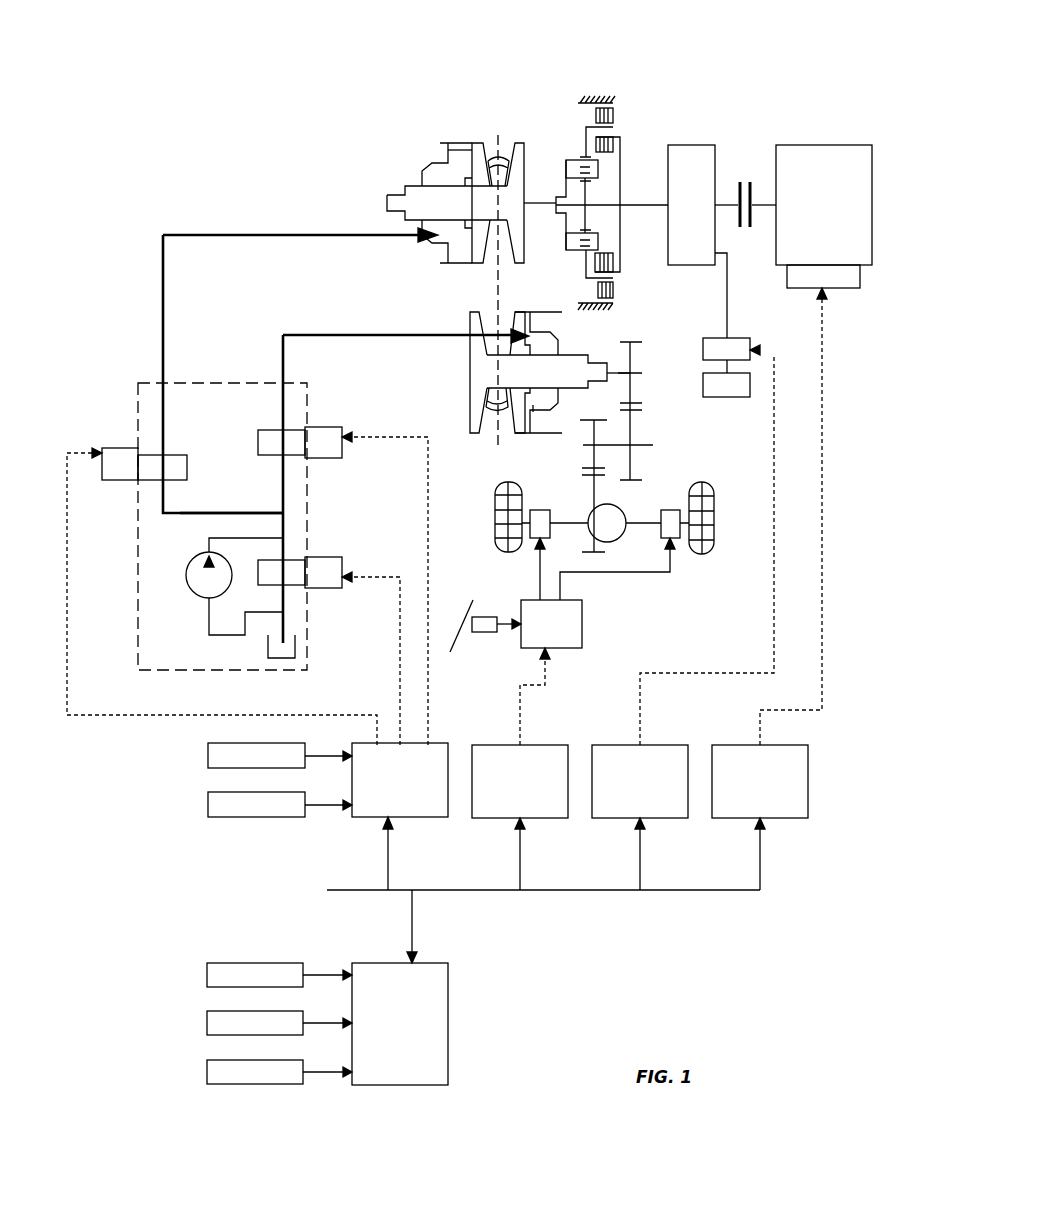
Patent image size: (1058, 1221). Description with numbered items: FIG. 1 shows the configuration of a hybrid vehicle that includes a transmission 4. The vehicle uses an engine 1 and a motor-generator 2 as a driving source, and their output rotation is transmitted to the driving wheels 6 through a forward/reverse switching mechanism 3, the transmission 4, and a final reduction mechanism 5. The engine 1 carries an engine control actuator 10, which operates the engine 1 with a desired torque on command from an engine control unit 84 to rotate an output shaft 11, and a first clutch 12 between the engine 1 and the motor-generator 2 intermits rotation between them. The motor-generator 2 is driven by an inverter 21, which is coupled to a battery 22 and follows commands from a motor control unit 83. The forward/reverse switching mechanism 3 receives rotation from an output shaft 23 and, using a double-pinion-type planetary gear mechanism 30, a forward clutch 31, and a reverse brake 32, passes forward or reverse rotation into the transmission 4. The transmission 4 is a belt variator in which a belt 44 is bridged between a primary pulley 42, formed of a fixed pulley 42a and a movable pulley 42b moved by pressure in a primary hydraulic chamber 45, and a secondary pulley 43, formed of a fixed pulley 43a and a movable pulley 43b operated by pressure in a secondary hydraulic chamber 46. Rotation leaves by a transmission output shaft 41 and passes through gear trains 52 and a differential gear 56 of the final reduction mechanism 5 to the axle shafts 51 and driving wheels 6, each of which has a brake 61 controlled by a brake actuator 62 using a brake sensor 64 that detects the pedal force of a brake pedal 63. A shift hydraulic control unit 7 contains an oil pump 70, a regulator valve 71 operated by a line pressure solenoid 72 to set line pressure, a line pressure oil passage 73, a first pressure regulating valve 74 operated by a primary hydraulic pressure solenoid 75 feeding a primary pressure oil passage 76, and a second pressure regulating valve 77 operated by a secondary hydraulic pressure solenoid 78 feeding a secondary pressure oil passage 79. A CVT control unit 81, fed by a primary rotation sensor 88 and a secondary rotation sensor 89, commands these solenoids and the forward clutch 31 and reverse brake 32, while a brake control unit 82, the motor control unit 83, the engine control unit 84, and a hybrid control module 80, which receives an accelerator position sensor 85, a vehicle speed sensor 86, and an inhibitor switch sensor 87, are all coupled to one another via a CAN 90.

The engine 1 is at (833, 145).
The motor-generator 2 is at (700, 143).
The forward/reverse switching mechanism 3 is at (614, 166).
The transmission 4 is at (502, 88).
The final reduction mechanism 5 is at (665, 418).
The driving wheels 6 is at (495, 530).
The shift hydraulic control unit 7 is at (150, 380).
The engine control actuator 10 is at (860, 293).
The output shaft 11 is at (758, 198).
The first clutch 12 is at (742, 180).
The inverter 21 is at (710, 337).
The battery 22 is at (702, 383).
The output shaft 23 is at (635, 198).
The double-pinion-type planetary gear mechanism 30 is at (587, 220).
The forward clutch 31 is at (610, 137).
The reverse brake 32 is at (612, 106).
The transmission output shaft 41 is at (617, 373).
The primary pulley 42 is at (450, 167).
The fixed pulley 42a is at (518, 138).
The movable pulley 42b is at (480, 140).
The secondary pulley 43 is at (513, 374).
The fixed pulley 43a is at (460, 318).
The movable pulley 43b is at (522, 310).
The belt 44 is at (493, 418).
The primary hydraulic chamber 45 is at (460, 157).
The secondary hydraulic chamber 46 is at (537, 410).
The axle shafts 51 is at (562, 528).
The gear trains 52 is at (632, 460).
The differential gear 56 is at (618, 503).
The brake 61 is at (532, 542).
The brake actuator 62 is at (583, 622).
The brake pedal 63 is at (457, 657).
The brake sensor 64 is at (483, 633).
The oil pump 70 is at (188, 590).
The regulator valve 71 is at (290, 558).
The line pressure solenoid 72 is at (330, 592).
The line pressure oil passage 73 is at (185, 517).
The first pressure regulating valve 74 is at (152, 452).
The primary hydraulic pressure solenoid 75 is at (110, 482).
The primary pressure oil passage 76 is at (160, 398).
The second pressure regulating valve 77 is at (290, 430).
The secondary hydraulic pressure solenoid 78 is at (330, 460).
The secondary pressure oil passage 79 is at (282, 407).
The hybrid control module 80 is at (448, 1000).
The CVT control unit 81 is at (425, 822).
The brake control unit 82 is at (545, 822).
The motor control unit 83 is at (665, 822).
The engine control unit 84 is at (785, 822).
The accelerator position sensor 85 is at (205, 976).
The vehicle speed sensor 86 is at (205, 1024).
The inhibitor switch sensor 87 is at (205, 1073).
The primary rotation sensor 88 is at (205, 756).
The secondary rotation sensor 89 is at (205, 805).
The CAN 90 is at (688, 892).